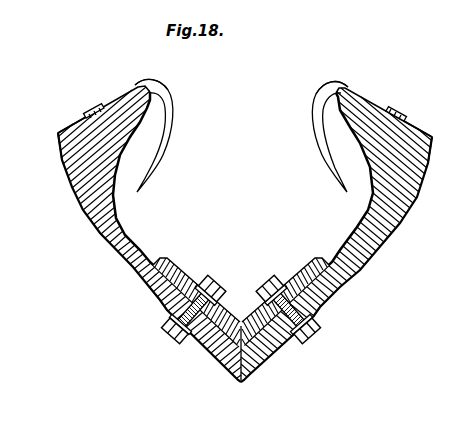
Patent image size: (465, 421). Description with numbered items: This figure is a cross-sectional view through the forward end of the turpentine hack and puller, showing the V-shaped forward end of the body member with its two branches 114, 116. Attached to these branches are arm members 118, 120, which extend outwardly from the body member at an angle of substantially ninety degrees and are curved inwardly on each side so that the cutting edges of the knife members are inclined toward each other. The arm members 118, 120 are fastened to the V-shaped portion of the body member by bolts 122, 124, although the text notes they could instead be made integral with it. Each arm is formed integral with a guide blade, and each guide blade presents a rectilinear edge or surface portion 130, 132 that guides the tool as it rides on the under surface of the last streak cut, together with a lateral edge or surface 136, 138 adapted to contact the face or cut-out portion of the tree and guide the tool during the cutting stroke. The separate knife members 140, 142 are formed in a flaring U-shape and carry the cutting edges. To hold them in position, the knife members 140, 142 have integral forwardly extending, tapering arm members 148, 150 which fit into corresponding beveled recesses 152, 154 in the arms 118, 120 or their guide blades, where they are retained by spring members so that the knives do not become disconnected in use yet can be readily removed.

The branch 114 is at (177, 262).
The branch 116 is at (323, 270).
The arm member 118 is at (103, 235).
The arm member 120 is at (405, 215).
The bolt 122 is at (213, 283).
The bolt 124 is at (255, 287).
The rectilinear edge 130 is at (158, 103).
The rectilinear edge 132 is at (333, 106).
The lateral edge 136 is at (116, 99).
The lateral edge 138 is at (374, 103).
The knife member 140 is at (156, 79).
The knife member 142 is at (328, 85).
The arm member 148 is at (87, 107).
The arm member 150 is at (405, 113).
The recess 152 is at (67, 126).
The recess 154 is at (420, 122).